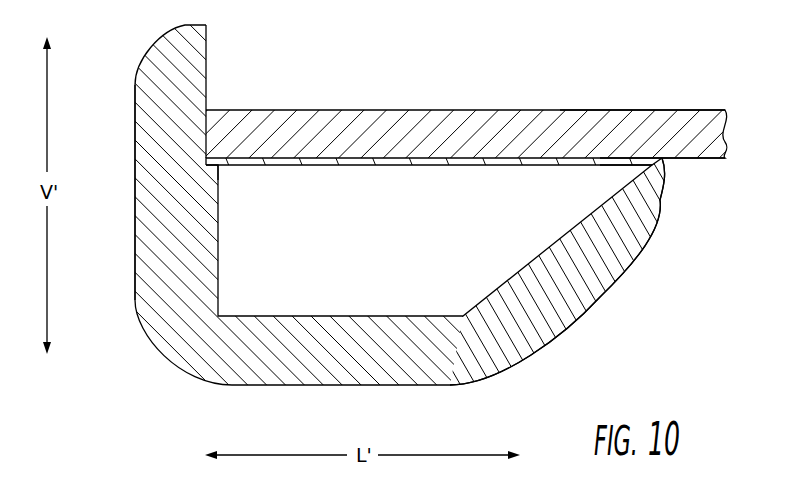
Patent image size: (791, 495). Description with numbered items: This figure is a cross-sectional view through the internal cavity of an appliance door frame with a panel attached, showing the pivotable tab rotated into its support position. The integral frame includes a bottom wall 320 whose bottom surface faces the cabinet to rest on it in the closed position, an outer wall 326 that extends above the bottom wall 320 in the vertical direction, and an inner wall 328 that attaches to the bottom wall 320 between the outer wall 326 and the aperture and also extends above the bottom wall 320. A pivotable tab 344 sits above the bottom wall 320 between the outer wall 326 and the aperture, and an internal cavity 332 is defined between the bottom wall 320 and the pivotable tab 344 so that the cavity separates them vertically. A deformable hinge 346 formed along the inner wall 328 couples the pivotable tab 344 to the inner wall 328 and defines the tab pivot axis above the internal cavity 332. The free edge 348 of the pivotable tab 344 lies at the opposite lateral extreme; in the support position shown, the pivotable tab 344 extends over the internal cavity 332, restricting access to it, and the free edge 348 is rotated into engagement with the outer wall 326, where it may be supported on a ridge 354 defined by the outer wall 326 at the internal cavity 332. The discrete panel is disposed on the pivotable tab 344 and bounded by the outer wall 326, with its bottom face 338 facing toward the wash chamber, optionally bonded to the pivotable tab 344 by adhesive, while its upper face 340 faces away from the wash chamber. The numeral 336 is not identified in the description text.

The bottom wall 320 is at (312, 386).
The outer wall 326 is at (134, 223).
The inner wall 328 is at (632, 258).
The internal cavity 332 is at (437, 281).
The top surface of plate 336 is at (623, 110).
The bottom face 338 is at (626, 178).
The upper face 340 is at (561, 104).
The pivotable tab 344 is at (348, 166).
The deformable hinge 346 is at (670, 162).
The free edge 348 is at (208, 160).
The ridge 354 is at (221, 164).